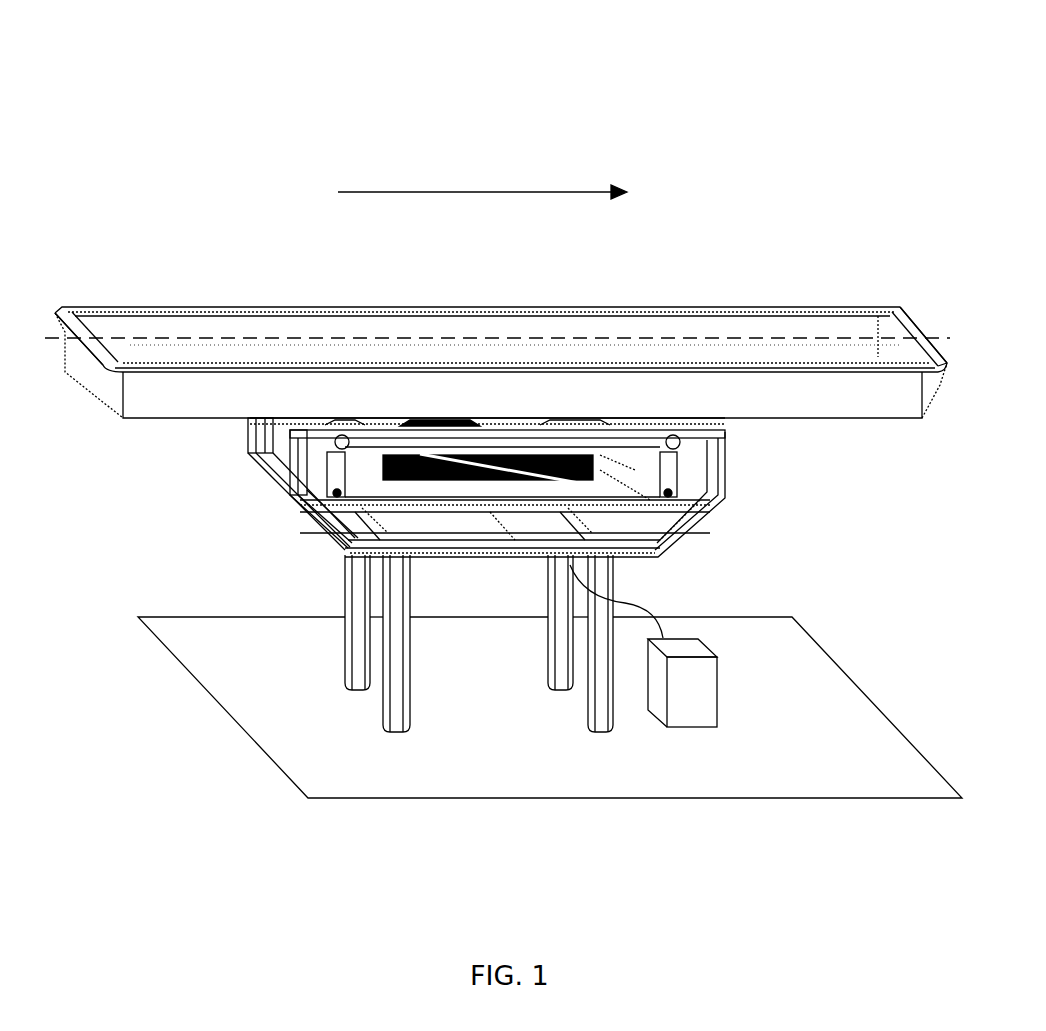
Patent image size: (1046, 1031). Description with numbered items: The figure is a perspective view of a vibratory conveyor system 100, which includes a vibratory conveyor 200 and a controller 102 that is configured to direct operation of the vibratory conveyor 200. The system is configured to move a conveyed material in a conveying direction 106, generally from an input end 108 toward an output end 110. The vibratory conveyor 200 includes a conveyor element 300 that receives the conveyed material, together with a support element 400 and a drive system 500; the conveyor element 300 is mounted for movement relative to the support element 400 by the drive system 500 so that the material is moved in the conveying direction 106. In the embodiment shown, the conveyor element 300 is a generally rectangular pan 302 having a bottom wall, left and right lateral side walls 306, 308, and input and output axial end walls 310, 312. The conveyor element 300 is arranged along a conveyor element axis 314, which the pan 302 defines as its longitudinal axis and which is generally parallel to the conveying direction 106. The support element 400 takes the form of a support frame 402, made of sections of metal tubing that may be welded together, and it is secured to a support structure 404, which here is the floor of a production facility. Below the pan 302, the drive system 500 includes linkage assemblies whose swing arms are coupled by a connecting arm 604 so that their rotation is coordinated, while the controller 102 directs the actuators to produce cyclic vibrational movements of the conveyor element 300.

The vibratory conveyor system 100 is at (198, 80).
The controller 102 is at (705, 692).
The conveying direction 106 is at (495, 190).
The input end 108 is at (78, 327).
The output end 110 is at (927, 347).
The vibratory conveyor 200 is at (674, 256).
The conveyor element 300 is at (170, 293).
The pan 302 is at (160, 398).
The left lateral side wall 306 is at (588, 325).
The right lateral side wall 308 is at (828, 405).
The input axial end wall 310 is at (98, 378).
The output axial end wall 312 is at (882, 330).
The conveyor element axis 314 is at (310, 330).
The support element 400 is at (332, 577).
The support frame 402 is at (525, 522).
The support structure 404 is at (308, 765).
The drive system 500 is at (692, 477).
The connecting arm 604 is at (623, 492).